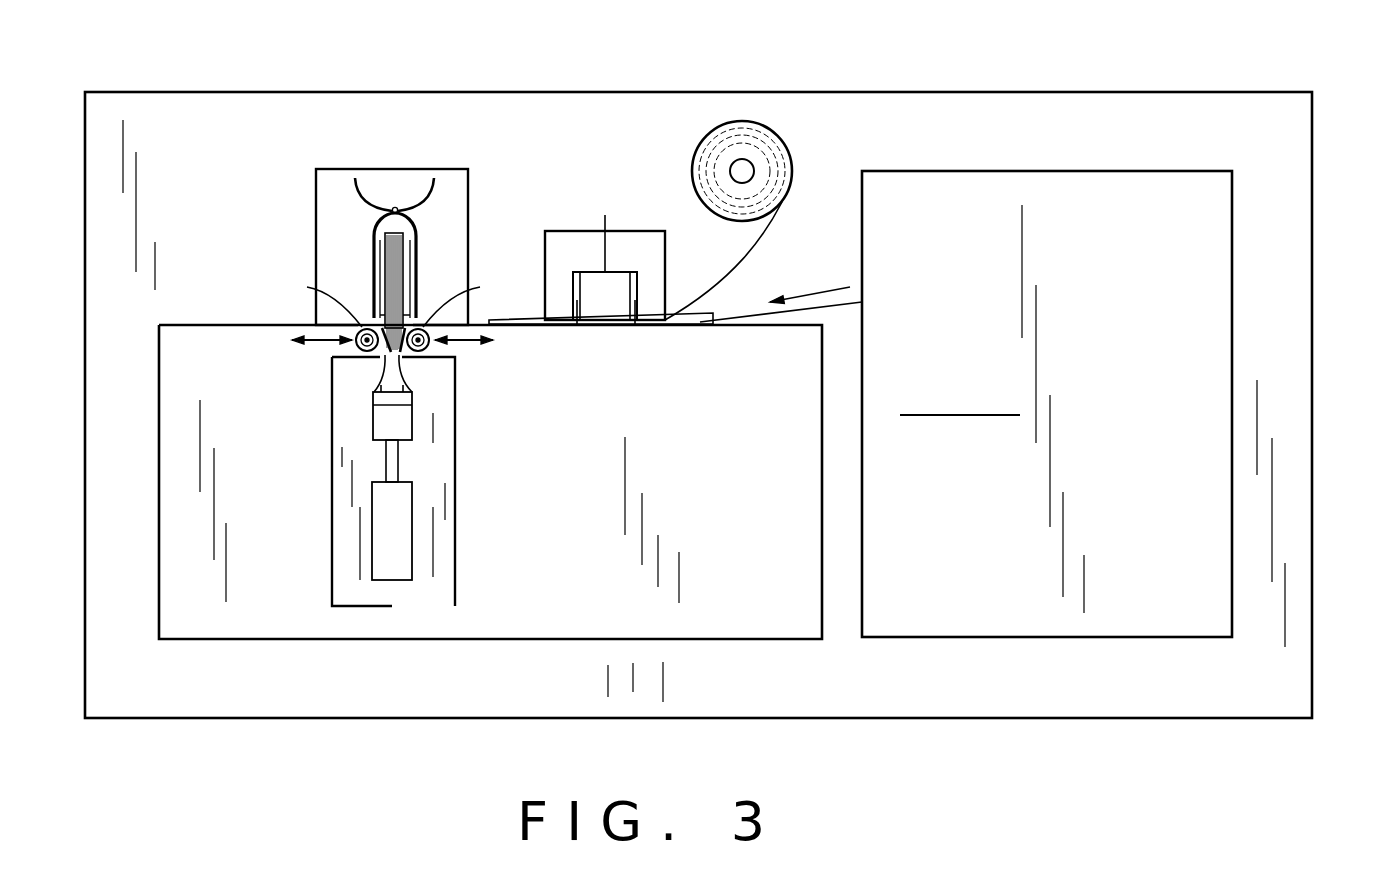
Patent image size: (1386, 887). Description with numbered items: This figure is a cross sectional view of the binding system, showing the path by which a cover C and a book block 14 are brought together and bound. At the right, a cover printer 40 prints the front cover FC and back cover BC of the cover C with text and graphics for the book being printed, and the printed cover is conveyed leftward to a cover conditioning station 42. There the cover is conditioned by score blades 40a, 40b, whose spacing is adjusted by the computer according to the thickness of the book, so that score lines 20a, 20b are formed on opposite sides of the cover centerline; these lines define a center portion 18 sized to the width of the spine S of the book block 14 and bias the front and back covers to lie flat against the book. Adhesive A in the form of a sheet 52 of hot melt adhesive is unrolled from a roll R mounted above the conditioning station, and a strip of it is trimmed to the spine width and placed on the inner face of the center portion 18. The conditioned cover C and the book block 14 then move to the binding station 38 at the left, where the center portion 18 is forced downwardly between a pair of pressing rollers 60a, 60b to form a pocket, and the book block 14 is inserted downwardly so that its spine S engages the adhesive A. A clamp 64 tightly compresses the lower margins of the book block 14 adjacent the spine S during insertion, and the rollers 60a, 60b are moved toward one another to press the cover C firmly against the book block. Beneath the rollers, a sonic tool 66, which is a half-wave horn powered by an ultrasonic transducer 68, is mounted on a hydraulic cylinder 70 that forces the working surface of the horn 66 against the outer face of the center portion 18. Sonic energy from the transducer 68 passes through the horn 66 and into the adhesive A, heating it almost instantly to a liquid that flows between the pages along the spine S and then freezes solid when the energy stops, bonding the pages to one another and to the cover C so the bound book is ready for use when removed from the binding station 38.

The binding station 38 is at (348, 133).
The book block 14 is at (380, 250).
The clamp 64 is at (412, 222).
The cover conditioning station 42 is at (617, 180).
The roll of adhesive R is at (757, 120).
The adhesive A is at (797, 150).
The score blade 40a is at (577, 297).
The score blade 40b is at (635, 290).
The sheet of adhesive 52 is at (755, 246).
The cover printer 40 is at (1240, 277).
The cover C is at (332, 287).
The front cover FC is at (345, 304).
The back cover BC is at (445, 307).
The pressing roller 60a is at (356, 350).
The pressing roller 60b is at (428, 350).
The center portion 18 is at (380, 354).
The spine S is at (403, 353).
The ultrasonic transducer 68 is at (375, 420).
The sonic tool 66 is at (412, 353).
The hydraulic cylinder 70 is at (413, 530).
The score line 20a is at (577, 327).
The score line 20b is at (635, 327).